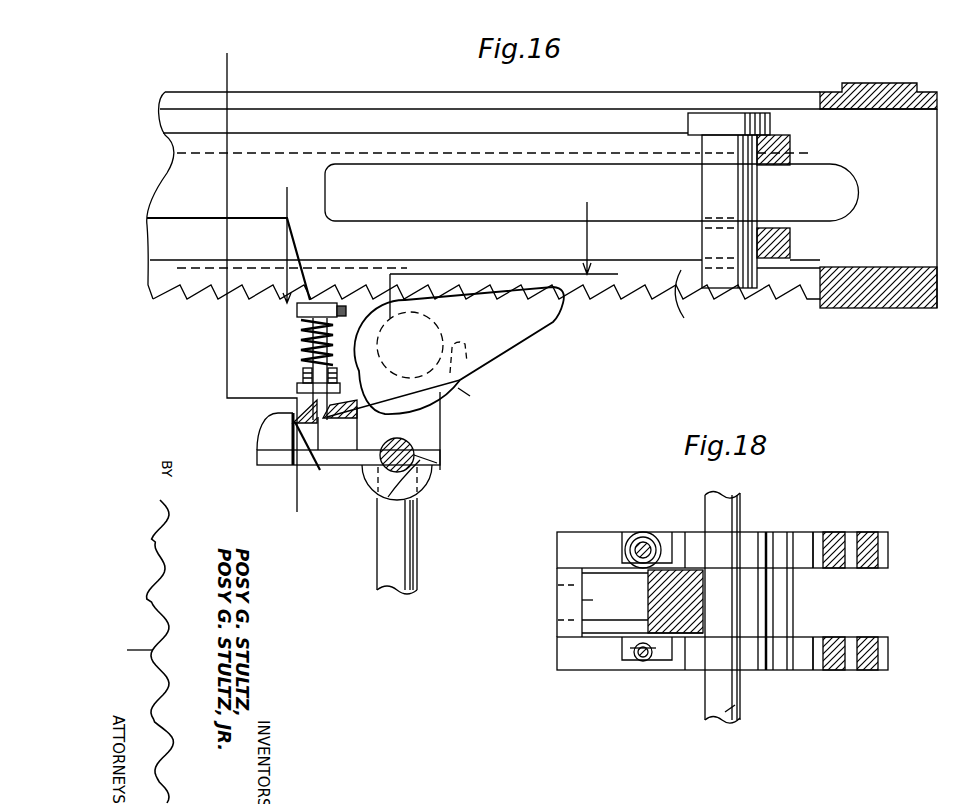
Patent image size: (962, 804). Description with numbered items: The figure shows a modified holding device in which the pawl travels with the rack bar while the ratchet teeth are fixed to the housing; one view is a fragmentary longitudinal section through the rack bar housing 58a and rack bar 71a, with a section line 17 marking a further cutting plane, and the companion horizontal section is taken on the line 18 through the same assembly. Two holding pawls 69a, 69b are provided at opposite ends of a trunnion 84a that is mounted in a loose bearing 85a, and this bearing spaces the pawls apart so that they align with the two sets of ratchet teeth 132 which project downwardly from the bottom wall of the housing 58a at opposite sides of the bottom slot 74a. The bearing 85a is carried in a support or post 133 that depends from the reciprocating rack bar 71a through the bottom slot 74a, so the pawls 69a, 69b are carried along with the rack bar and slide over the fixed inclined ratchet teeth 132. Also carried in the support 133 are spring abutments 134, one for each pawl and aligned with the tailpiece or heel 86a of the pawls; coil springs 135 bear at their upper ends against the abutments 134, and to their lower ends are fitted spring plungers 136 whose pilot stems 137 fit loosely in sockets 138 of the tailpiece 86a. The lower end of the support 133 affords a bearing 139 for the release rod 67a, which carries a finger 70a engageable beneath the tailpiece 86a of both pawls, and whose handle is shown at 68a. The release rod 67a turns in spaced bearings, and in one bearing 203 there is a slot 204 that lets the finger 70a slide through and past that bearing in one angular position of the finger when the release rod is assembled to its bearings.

In FIG. 16, the section line 17- 17 is at (217, 64).
In FIG. 16, the section line 18- 18 is at (446, 241).
In FIG. 16, the housing 58a is at (845, 86).
In FIG. 16, the rack bar 71a is at (198, 192).
In FIG. 16, the ratchet teeth 132 is at (486, 307).
In FIG. 16, the bottom slot 74a is at (695, 304).
In FIG. 16, the holding pawl 69a is at (500, 331).
In FIG. 18, the holding pawl 69a is at (790, 663).
In FIG. 18, the holding pawl 69b is at (788, 540).
In FIG. 16, the loose bearing 85a is at (470, 396).
In FIG. 18, the loose bearing 85a is at (778, 606).
In FIG. 16, the support or post 133 is at (433, 422).
In FIG. 18, the support or post 133 is at (648, 612).
In FIG. 16, the spring abutments 134 is at (285, 306).
In FIG. 16, the coil springs 135 is at (300, 337).
In FIG. 18, the coil springs 135 is at (641, 534).
In FIG. 16, the spring plungers 136 is at (297, 390).
In FIG. 16, the pilot stems 137 is at (318, 421).
In FIG. 18, the pilot stems 137 is at (650, 540).
In FIG. 16, the sockets 138 is at (320, 470).
In FIG. 18, the sockets 138 is at (637, 661).
In FIG. 16, the bearing 139 is at (388, 497).
In FIG. 16, the tailpiece or heel 86a is at (278, 418).
In FIG. 18, the tailpiece or heel 86a is at (578, 532).
In FIG. 16, the finger 70a is at (303, 458).
In FIG. 18, the finger 70a is at (582, 600).
In FIG. 16, the slot 204 is at (441, 455).
In FIG. 16, the bearing 203 is at (432, 489).
In FIG. 16, the release rod 67a is at (418, 461).
In FIG. 18, the release rod 67a is at (725, 712).
In FIG. 16, the handle 68a is at (400, 564).
In FIG. 18, the trunnion 84a is at (738, 580).